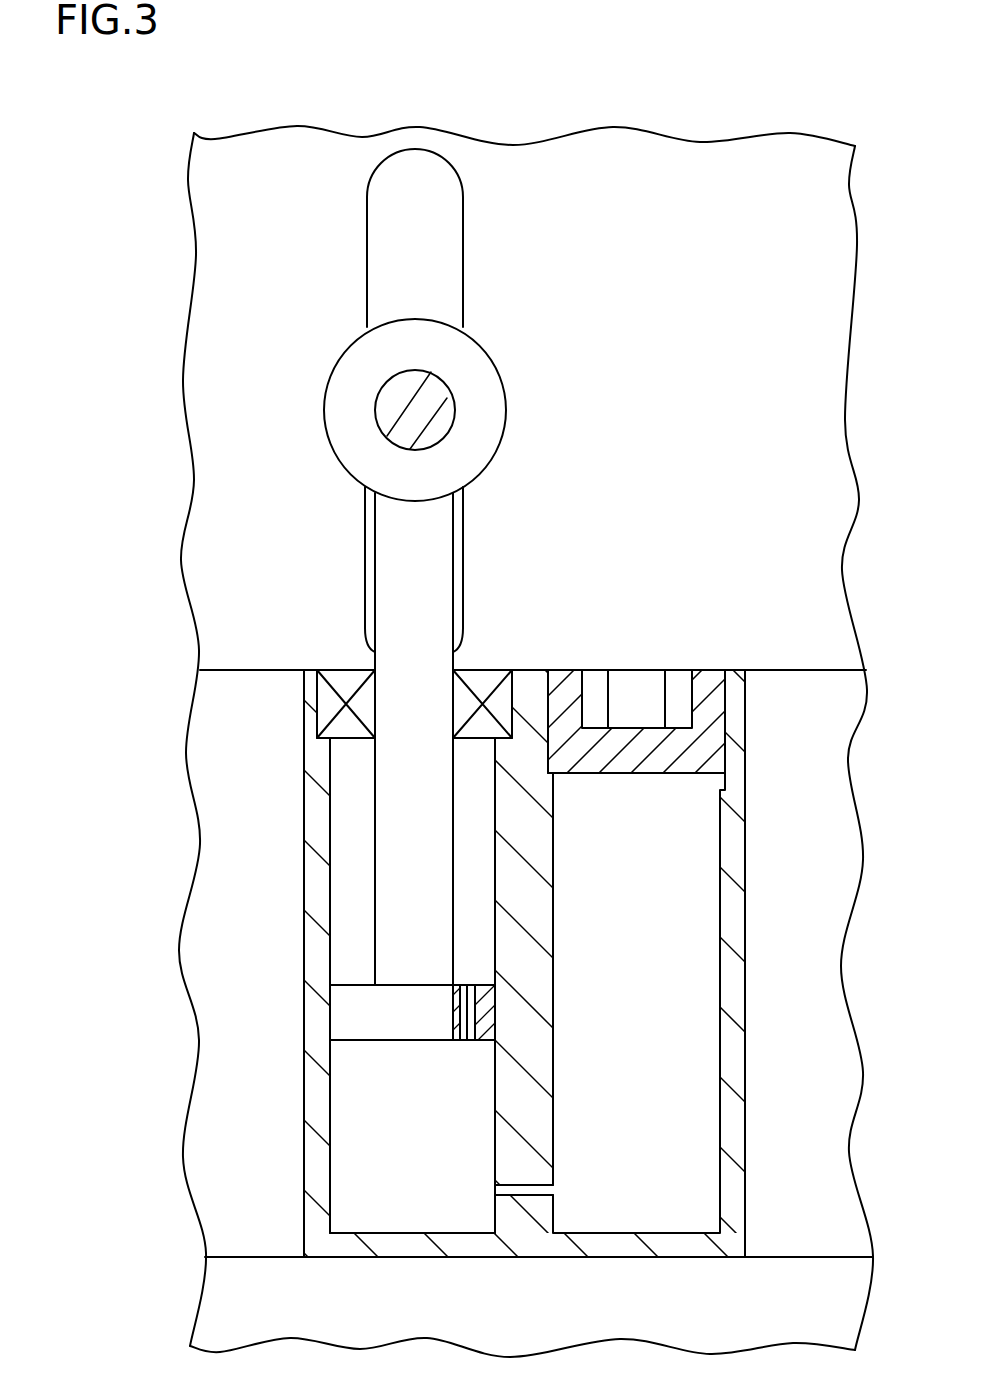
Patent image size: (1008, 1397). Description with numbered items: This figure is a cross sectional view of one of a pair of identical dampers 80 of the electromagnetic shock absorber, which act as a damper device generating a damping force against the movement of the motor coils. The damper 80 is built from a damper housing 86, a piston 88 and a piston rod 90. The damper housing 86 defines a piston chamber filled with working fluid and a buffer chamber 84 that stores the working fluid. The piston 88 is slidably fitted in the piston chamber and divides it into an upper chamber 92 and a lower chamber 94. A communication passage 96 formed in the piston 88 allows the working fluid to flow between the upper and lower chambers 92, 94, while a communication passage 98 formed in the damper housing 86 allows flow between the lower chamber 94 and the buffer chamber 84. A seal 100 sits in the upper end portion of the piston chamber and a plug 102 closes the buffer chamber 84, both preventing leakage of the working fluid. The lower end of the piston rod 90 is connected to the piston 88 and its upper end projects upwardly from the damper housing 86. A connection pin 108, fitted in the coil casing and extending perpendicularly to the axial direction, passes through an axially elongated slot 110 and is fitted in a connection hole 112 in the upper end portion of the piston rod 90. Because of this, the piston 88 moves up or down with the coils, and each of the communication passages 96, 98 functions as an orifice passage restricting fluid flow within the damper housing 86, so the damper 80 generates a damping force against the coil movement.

The damper 80 is at (152, 309).
The buffer chamber 84 is at (680, 1000).
The damper housing 86 is at (730, 832).
The piston 88 is at (340, 998).
The piston rod 90 is at (390, 770).
The upper chamber 92 is at (347, 848).
The lower chamber 94 is at (345, 1137).
The communication passage 96 is at (455, 1000).
The communication passage 98 is at (518, 1193).
The seal 100 is at (470, 690).
The plug 102 is at (700, 680).
The connection pin 108 is at (430, 395).
The slot 110 is at (438, 253).
The connection hole 112 is at (375, 385).